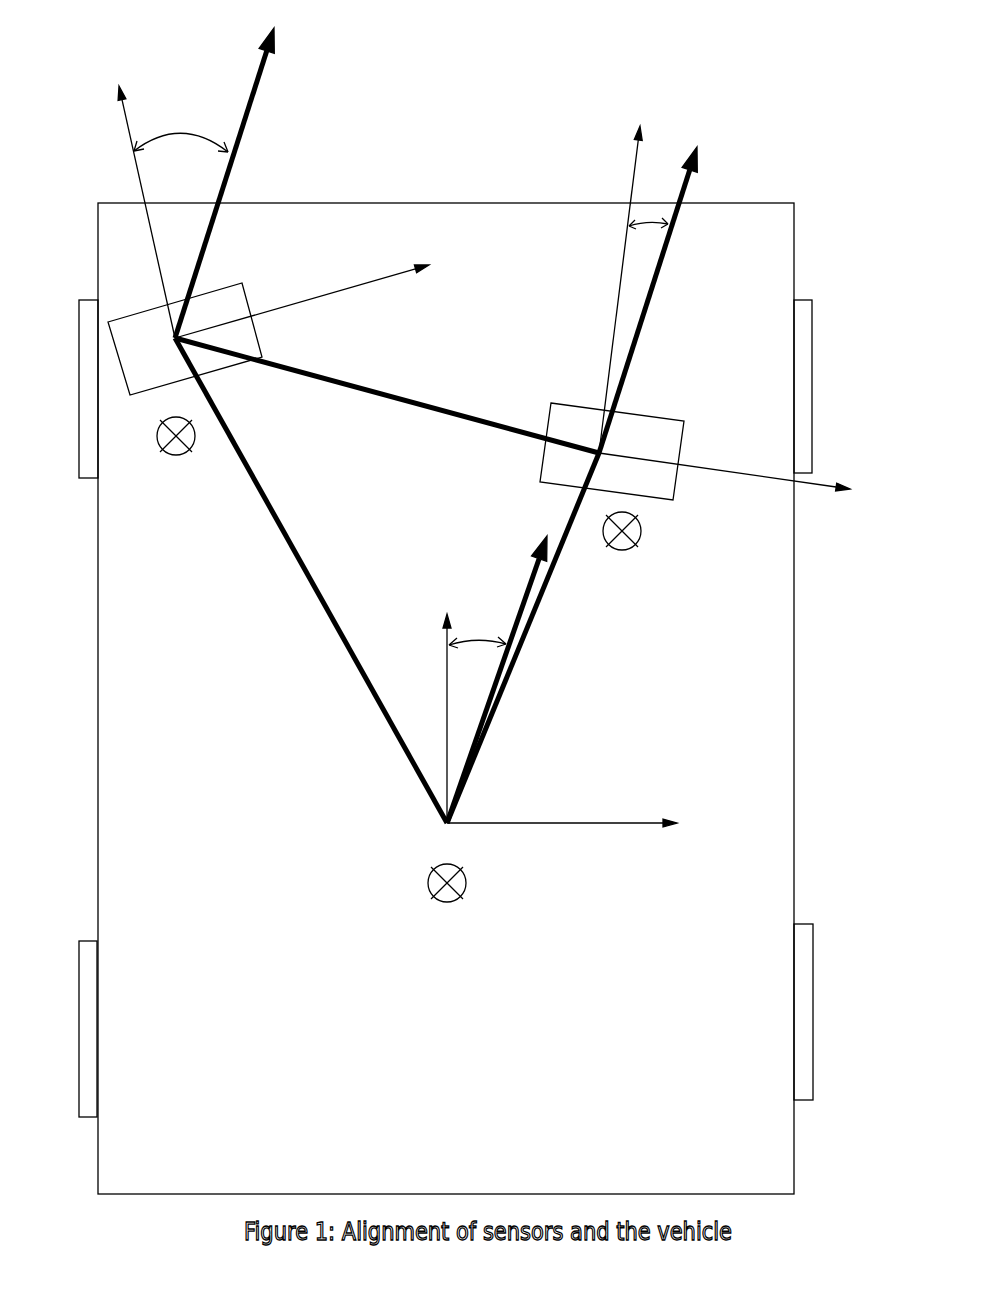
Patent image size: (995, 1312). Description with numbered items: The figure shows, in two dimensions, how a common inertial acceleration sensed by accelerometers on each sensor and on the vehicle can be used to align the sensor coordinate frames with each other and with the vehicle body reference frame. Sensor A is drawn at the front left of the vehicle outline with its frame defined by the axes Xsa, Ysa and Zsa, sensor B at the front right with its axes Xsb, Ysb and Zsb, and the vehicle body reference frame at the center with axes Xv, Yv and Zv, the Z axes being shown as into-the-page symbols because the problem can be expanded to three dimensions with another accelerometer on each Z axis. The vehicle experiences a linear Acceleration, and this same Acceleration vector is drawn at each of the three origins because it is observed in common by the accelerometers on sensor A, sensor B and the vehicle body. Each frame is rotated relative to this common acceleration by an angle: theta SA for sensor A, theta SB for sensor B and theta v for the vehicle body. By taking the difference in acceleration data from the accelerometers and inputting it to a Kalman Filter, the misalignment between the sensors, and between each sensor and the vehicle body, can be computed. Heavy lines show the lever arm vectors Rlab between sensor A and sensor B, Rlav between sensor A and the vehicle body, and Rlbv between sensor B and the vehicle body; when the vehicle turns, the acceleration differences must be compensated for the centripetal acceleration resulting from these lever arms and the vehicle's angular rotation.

The sensor A X axis Xsa is at (111, 212).
The sensor A Y axis Ysa is at (302, 291).
The sensor A Z axis Zsa is at (173, 462).
The sensor B X axis Xsb is at (611, 289).
The sensor B Y axis Ysb is at (724, 492).
The sensor B Z axis Zsb is at (612, 552).
The vehicle body X axis Xv is at (423, 711).
The vehicle body Y axis Yv is at (586, 822).
The vehicle body Z axis Zv is at (447, 909).
The common linear acceleration Acceleration is at (516, 425).
The lever arm vector between sensor A and sensor B Rlab is at (387, 395).
The lever arm vector between sensor A and vehicle body Rlav is at (311, 580).
The lever arm vector between sensor B and vehicle body Rlbv is at (523, 638).
The sensor A misalignment angle SA is at (157, 87).
The sensor B misalignment angle SB is at (545, 241).
The vehicle body angle v is at (447, 573).